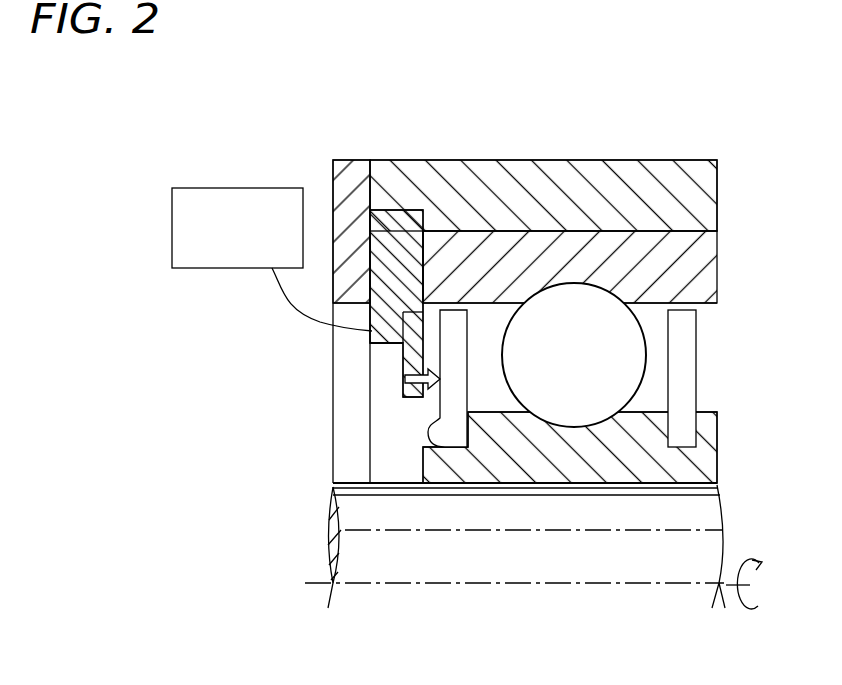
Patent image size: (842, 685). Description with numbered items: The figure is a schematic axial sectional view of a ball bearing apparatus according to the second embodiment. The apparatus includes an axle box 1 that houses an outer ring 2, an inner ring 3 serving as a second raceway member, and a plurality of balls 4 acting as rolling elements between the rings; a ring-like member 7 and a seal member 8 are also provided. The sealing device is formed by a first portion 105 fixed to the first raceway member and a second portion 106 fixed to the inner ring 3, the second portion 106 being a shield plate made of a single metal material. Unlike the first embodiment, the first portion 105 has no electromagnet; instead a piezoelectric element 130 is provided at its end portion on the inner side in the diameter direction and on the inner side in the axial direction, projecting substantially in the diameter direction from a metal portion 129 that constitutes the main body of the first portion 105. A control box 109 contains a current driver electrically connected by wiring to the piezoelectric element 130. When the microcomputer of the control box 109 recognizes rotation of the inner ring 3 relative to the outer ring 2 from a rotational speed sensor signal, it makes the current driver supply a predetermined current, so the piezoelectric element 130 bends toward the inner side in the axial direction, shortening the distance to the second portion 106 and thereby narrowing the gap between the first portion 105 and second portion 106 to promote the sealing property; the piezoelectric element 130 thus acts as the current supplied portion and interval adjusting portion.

The axle box 1 is at (573, 180).
The outer ring 2 is at (668, 245).
The inner ring 3 is at (508, 455).
The balls 4 is at (596, 388).
The ring-like member 7 is at (336, 184).
The seal member 8 is at (696, 345).
The first portion 105 is at (406, 216).
The second portion 106 is at (448, 447).
The control box 109 is at (172, 218).
The metal portion 129 is at (388, 242).
The piezoelectric element 130 is at (372, 358).